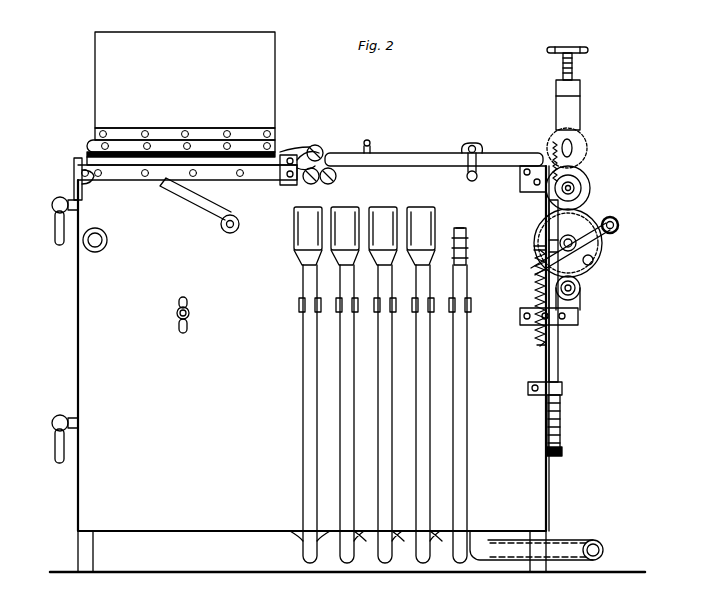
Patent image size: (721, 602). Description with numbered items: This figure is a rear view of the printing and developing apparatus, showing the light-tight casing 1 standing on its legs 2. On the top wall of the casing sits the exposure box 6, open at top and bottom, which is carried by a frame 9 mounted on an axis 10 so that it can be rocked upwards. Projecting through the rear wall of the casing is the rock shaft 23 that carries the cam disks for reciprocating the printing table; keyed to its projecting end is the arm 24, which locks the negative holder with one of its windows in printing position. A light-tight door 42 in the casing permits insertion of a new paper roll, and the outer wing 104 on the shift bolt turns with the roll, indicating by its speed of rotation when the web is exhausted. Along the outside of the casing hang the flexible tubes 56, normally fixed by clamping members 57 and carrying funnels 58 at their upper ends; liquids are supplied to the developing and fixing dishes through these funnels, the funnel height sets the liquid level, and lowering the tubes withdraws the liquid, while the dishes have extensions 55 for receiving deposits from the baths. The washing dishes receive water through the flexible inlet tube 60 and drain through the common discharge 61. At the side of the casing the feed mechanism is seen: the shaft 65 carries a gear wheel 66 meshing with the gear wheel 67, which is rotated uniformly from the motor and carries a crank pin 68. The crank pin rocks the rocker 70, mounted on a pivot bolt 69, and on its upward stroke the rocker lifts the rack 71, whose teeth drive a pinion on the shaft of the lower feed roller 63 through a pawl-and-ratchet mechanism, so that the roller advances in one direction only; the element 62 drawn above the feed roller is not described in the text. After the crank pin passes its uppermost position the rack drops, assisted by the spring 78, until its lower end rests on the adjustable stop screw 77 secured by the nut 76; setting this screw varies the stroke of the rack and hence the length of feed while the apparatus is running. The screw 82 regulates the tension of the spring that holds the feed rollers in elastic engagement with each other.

The casing 1 is at (78, 326).
The legs 2 is at (84, 553).
The box 6 is at (276, 77).
The frame 9 is at (200, 146).
The axis 10 is at (321, 147).
The rock shaft 23 is at (238, 219).
The arm 24 is at (193, 200).
The light-tight door 42 is at (78, 381).
The extensions 55 is at (366, 543).
The flexible tubes 56 is at (310, 410).
The clamping members 57 is at (320, 312).
The funnels 58 is at (383, 206).
The flexible inlet tube 60 is at (467, 405).
The common discharge 61 is at (575, 548).
The housing 62 is at (585, 145).
The lower feed roller 63 is at (588, 190).
The shaft 65 is at (575, 300).
The gear wheel 66 is at (581, 293).
The gear wheel 67 is at (536, 228).
The crank pin 68 is at (594, 260).
The pivot bolt 69 is at (618, 221).
The rocker 70 is at (600, 246).
The rack 71 is at (560, 242).
The nut 76 is at (562, 390).
The screw 77 is at (560, 430).
The spring 78 is at (536, 280).
The screw 82 is at (572, 70).
The outer wing 104 is at (189, 323).